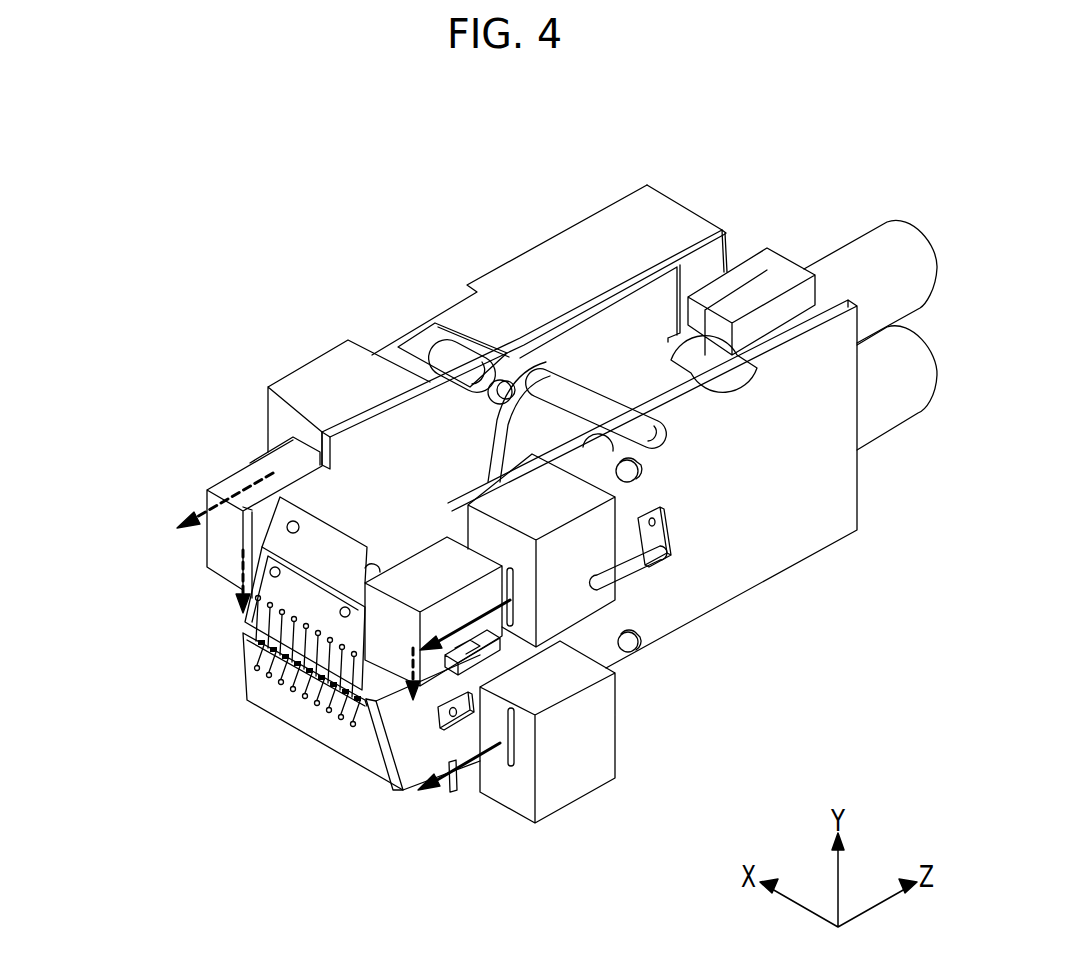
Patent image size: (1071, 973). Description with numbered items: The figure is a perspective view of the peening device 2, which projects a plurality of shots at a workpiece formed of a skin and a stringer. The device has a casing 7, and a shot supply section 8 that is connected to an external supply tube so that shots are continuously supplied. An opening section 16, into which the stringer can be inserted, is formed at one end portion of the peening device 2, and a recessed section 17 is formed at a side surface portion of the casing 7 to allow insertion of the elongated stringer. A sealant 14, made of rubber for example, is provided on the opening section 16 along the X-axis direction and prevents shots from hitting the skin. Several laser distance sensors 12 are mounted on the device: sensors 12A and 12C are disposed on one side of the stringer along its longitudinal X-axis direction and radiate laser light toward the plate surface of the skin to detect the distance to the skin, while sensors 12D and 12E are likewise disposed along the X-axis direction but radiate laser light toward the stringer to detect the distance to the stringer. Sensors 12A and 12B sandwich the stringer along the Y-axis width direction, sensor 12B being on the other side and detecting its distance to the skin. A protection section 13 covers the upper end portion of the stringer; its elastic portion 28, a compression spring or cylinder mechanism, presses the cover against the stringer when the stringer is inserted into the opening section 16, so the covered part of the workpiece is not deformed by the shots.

The peening device 2 is at (855, 165).
The casing 7 is at (808, 542).
The shot supply section 8 is at (828, 248).
The sensor 12 is at (426, 555).
The sensor 12A is at (625, 600).
The sensor 12B is at (597, 735).
The sensor 12C is at (310, 385).
The sensor 12D is at (425, 560).
The sensor 12E is at (215, 553).
The protection section 13 is at (497, 662).
The sealant 14 is at (247, 617).
The opening section 16 is at (357, 705).
The recessed section 17 is at (383, 708).
The elastic portion 28 is at (628, 552).